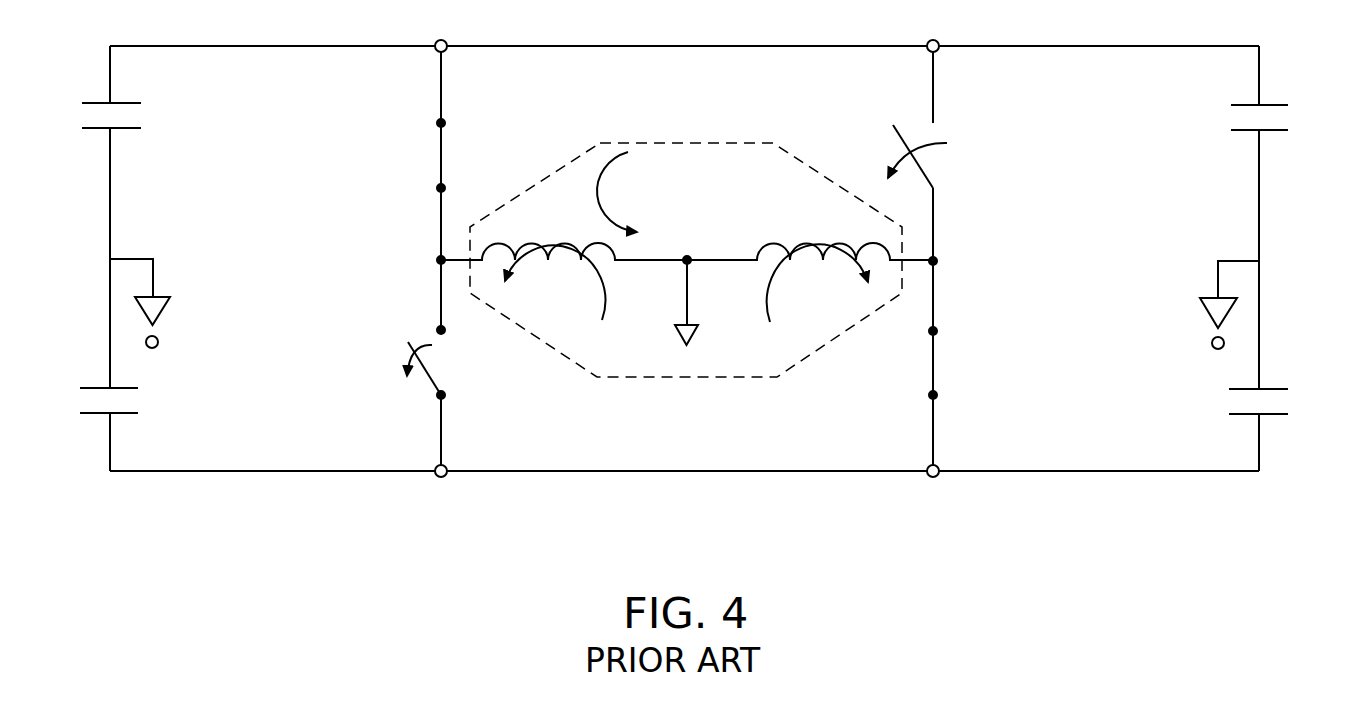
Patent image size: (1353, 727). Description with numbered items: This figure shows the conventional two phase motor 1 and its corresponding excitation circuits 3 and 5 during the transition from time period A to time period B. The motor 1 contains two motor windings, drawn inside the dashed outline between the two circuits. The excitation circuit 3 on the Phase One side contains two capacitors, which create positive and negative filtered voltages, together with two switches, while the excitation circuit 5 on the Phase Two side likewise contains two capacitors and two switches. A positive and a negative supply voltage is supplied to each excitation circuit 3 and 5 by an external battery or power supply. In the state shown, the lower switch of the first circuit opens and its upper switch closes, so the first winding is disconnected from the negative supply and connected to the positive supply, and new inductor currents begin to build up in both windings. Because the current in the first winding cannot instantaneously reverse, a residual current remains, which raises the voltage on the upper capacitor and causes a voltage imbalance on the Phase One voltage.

The two phase motor 1 is at (675, 137).
The excitation circuit 3 is at (269, 46).
The excitation circuit 5 is at (1058, 46).